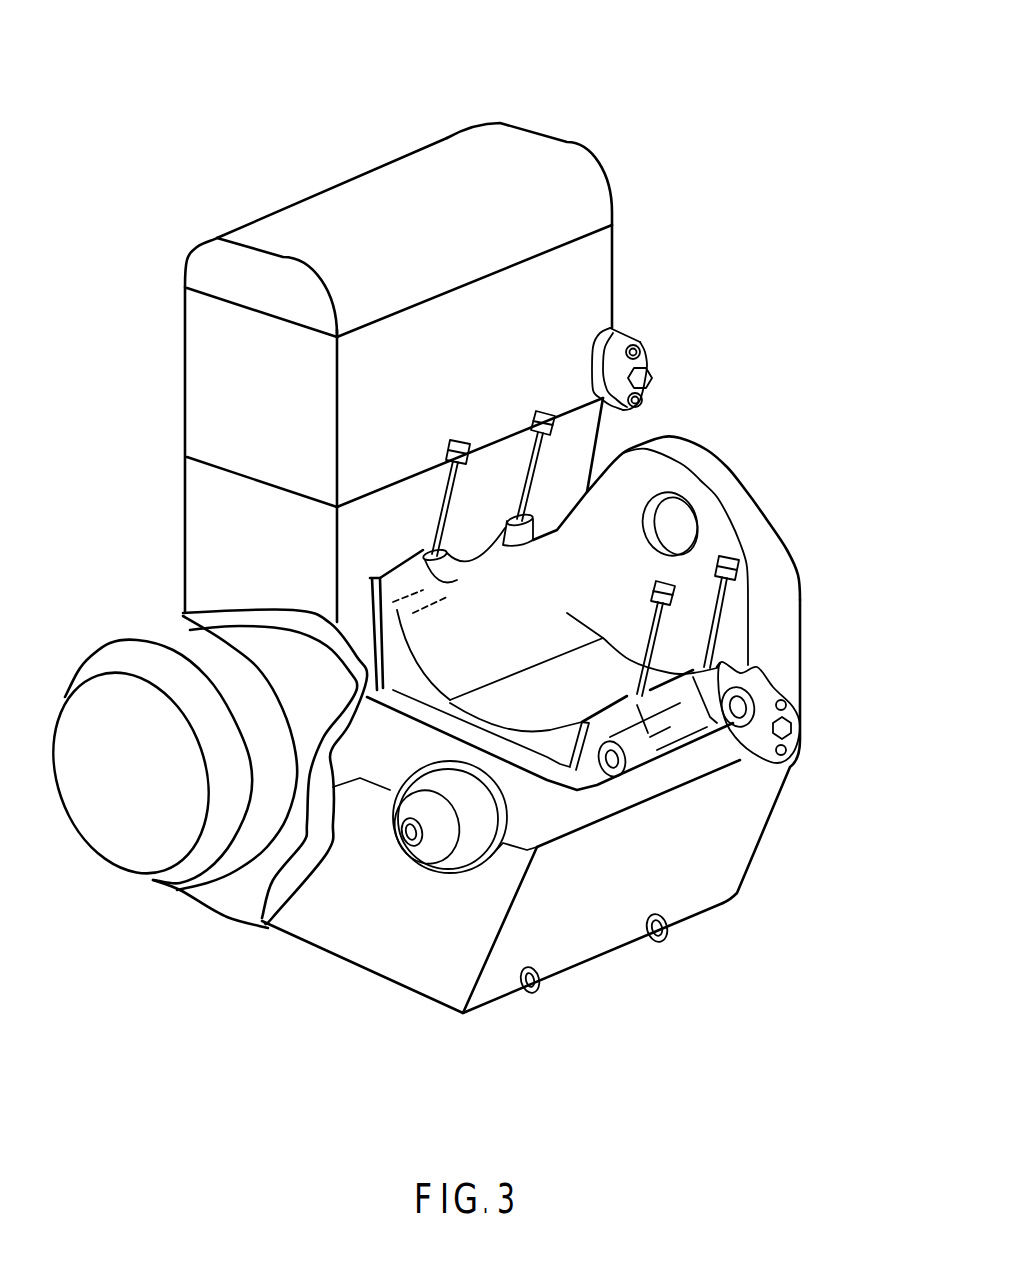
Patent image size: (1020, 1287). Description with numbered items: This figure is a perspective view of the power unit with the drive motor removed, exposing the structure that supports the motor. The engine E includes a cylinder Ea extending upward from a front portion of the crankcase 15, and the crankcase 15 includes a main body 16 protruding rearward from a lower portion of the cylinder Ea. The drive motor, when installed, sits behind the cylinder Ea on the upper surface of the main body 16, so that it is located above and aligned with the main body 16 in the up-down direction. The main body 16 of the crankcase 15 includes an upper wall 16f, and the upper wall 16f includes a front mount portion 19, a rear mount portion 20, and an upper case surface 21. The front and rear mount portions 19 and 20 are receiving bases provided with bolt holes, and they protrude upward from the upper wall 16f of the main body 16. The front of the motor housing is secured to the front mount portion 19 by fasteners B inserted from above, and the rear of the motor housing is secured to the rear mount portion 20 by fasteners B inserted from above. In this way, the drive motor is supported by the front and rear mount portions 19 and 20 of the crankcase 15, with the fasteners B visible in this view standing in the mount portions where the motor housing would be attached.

The engine E is at (445, 138).
The cylinder Ea is at (197, 382).
The fasteners B is at (453, 440).
The front mount portion 19 is at (423, 557).
The upper case surface 21 is at (567, 615).
The rear mount portion 20 is at (720, 663).
The main body 16 is at (713, 897).
The upper wall 16f is at (545, 765).
The crankcase 15 is at (585, 965).